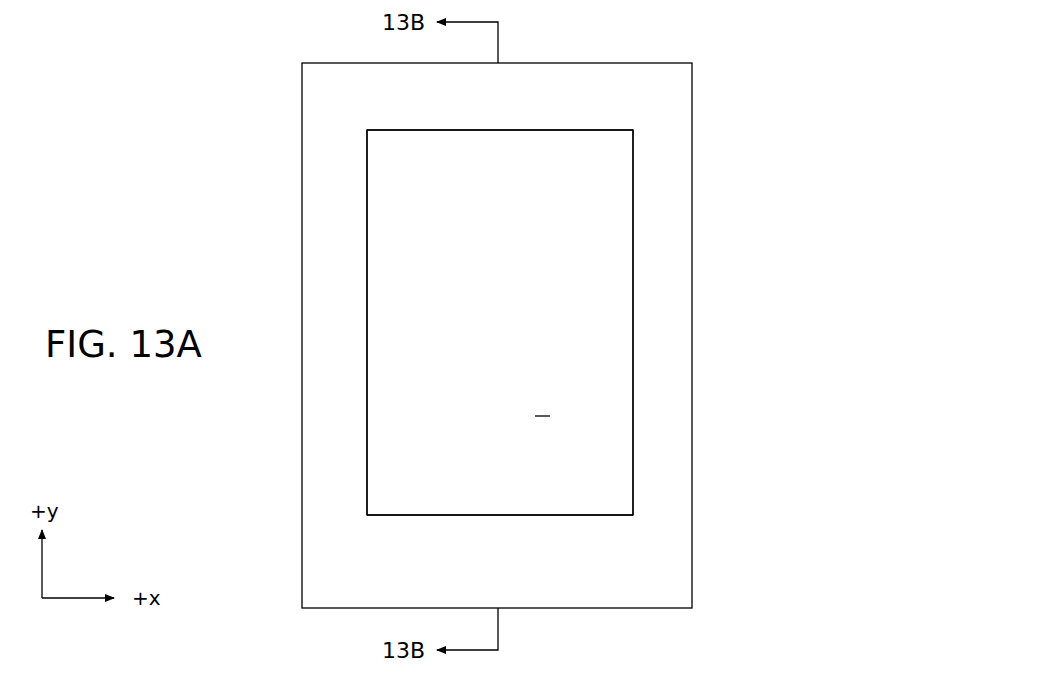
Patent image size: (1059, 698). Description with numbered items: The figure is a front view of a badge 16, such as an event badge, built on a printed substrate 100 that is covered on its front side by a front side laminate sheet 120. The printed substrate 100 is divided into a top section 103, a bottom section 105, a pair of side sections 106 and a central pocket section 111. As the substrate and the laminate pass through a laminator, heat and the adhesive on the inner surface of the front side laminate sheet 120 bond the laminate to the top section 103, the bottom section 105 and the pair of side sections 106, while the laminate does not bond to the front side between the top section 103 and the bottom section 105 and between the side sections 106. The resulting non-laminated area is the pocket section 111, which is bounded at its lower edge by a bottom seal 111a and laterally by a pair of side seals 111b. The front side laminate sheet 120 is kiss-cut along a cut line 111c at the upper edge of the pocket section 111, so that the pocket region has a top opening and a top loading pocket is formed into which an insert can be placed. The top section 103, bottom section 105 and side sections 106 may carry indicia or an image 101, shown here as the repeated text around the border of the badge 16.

The badge 16 is at (806, 56).
The printed substrate 100 is at (650, 62).
The indicia and/or image 101 is at (330, 482).
The top section 103 is at (357, 88).
The bottom section 105 is at (597, 590).
The side sections 106 is at (313, 245).
The pocket section 111 is at (388, 157).
The bottom seal 111a is at (519, 515).
The side seals 111b is at (367, 340).
The cut line 111c is at (440, 131).
The front side laminate sheet 120 is at (508, 344).